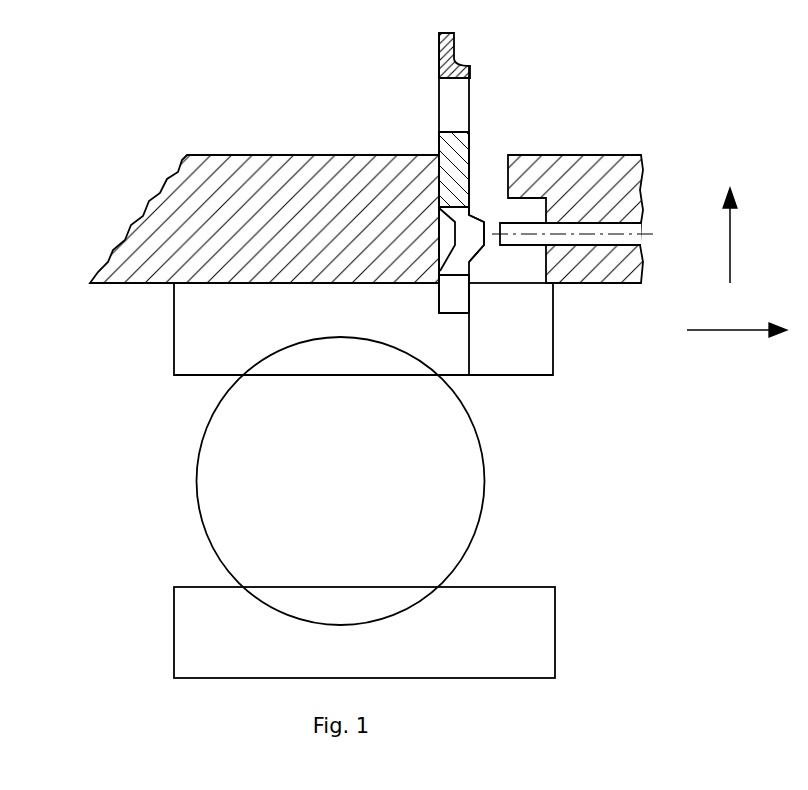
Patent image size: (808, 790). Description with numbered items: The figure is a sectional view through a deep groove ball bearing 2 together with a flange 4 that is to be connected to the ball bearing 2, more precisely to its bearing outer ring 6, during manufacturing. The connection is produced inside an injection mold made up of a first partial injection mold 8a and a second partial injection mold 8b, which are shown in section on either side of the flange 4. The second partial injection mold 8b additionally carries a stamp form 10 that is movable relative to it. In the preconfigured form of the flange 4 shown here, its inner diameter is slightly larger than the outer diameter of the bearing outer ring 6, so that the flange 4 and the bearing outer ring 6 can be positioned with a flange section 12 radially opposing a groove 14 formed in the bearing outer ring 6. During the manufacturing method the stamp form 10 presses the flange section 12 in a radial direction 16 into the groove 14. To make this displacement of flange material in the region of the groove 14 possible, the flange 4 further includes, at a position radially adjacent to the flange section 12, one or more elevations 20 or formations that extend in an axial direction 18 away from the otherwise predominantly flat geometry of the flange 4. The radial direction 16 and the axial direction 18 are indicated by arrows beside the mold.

The ball bearing 2 is at (595, 333).
The flange 4 is at (440, 150).
The bearing outer ring 6 is at (174, 337).
The first partial injection mold 8a is at (300, 157).
The second partial injection mold 8b is at (572, 155).
The stamp form 10 is at (643, 224).
The flange section 12 is at (470, 260).
The groove 14 is at (457, 300).
The radial direction 16 is at (730, 242).
The axial direction 18 is at (729, 332).
The elevation 20 is at (482, 220).